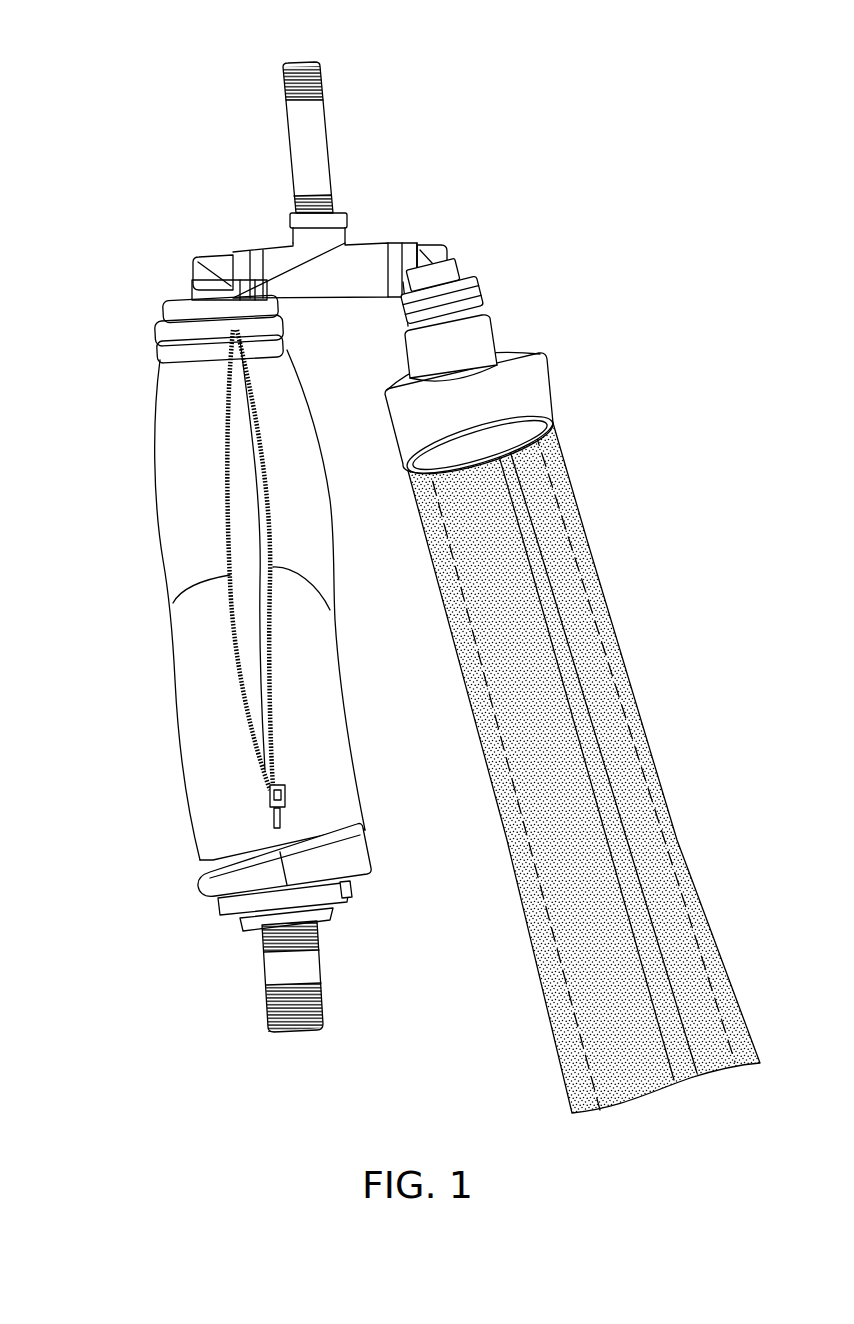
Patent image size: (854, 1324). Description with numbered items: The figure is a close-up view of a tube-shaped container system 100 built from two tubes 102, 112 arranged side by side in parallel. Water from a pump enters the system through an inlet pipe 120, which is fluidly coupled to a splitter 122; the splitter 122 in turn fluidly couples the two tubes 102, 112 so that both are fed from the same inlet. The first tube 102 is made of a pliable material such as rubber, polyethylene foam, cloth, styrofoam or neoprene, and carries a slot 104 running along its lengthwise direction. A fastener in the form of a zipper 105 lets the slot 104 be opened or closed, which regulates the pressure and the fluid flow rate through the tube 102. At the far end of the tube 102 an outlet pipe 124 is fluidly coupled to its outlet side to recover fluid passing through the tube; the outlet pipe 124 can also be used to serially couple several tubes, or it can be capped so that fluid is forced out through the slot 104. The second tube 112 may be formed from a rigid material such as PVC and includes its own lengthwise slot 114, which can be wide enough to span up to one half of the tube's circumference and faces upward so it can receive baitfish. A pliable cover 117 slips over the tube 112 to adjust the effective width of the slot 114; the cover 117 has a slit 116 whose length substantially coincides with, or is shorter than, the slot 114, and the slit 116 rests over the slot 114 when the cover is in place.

The tube-shaped container system 100 is at (110, 44).
The tube 102 is at (190, 436).
The slot 104 is at (264, 503).
The zipper 105 is at (262, 797).
The tube 112 is at (572, 685).
The slot 114 is at (620, 770).
The slit 116 is at (545, 607).
The cover 117 is at (620, 678).
The inlet pipe 120 is at (316, 141).
The splitter 122 is at (307, 257).
The outlet pipe 124 is at (278, 975).